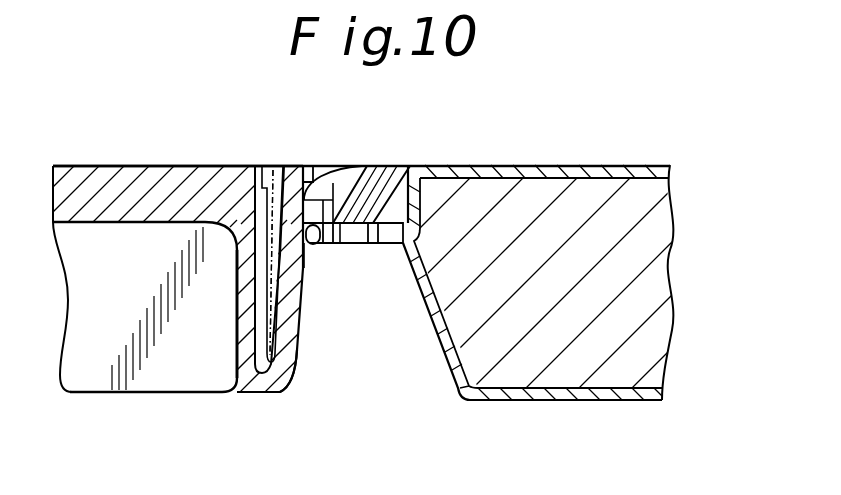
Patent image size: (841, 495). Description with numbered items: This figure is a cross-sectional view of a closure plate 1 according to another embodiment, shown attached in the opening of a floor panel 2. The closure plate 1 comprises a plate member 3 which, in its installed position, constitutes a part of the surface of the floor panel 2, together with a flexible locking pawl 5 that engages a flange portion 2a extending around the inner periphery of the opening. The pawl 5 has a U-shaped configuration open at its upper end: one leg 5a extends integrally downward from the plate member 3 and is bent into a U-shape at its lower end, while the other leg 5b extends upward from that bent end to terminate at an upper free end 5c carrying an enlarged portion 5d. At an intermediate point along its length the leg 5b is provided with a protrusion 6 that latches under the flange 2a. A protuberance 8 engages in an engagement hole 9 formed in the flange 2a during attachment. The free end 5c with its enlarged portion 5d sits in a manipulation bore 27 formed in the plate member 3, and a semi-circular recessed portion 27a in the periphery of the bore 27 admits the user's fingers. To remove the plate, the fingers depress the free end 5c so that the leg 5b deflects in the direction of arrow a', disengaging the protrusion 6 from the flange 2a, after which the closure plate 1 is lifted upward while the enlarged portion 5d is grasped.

The closure plate 1 is at (142, 166).
The floor panel 2 is at (664, 248).
The flange portion 2a is at (390, 247).
The plate member 3 is at (83, 190).
The flexible locking pawl 5 is at (245, 396).
The leg 5a is at (245, 323).
The leg 5b is at (297, 357).
The upper free end 5c is at (300, 166).
The enlarged portion 5d is at (337, 166).
The protrusion 6 is at (308, 250).
The protuberance 8 is at (367, 244).
The engagement hole 9 is at (338, 244).
The manipulation bore 27 is at (237, 166).
The recessed portion 27a is at (362, 166).
The arrow a' is at (273, 233).